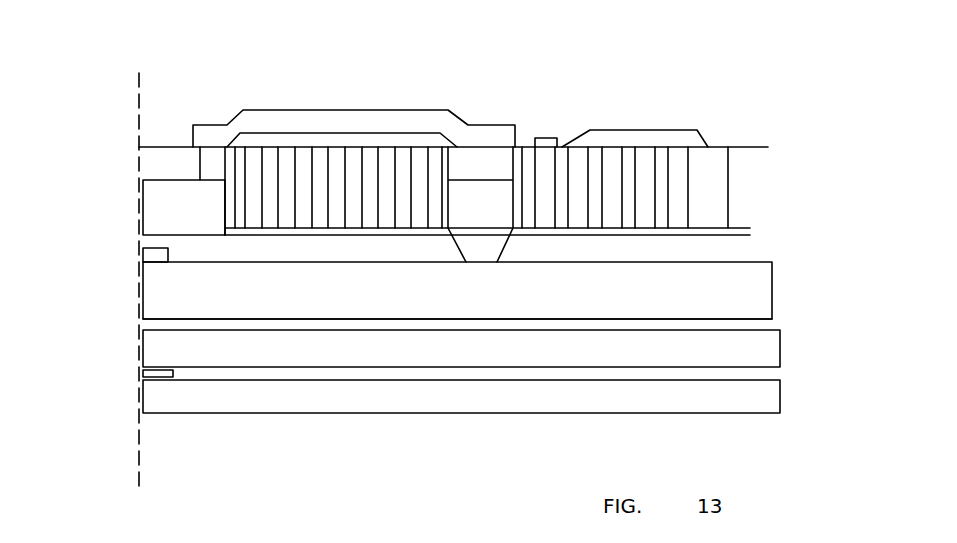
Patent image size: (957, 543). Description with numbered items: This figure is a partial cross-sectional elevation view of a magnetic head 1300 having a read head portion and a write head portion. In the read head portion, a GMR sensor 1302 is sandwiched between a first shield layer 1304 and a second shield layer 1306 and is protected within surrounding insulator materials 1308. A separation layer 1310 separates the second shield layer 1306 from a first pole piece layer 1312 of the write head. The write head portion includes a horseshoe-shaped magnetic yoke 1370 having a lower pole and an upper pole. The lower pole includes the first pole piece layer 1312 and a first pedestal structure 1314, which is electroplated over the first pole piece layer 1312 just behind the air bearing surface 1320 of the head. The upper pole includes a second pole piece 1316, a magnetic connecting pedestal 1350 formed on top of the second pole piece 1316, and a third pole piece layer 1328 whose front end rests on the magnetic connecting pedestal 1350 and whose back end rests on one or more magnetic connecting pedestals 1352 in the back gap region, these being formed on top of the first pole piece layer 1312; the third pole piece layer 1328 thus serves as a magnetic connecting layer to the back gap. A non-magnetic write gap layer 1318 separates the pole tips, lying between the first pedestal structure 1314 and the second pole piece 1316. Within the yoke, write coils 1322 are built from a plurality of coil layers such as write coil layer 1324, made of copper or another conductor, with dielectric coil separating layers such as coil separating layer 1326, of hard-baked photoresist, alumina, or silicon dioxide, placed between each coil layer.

The magnetic head 1300 is at (460, 366).
The GMR sensor 1302 is at (157, 378).
The first shield layer 1304 is at (782, 395).
The second shield layer 1306 is at (780, 343).
The insulator materials 1308 is at (775, 373).
The separation layer 1310 is at (765, 323).
The first pole piece layer 1312 is at (172, 305).
The first pedestal structure 1314 is at (148, 253).
The second pole piece 1316 is at (173, 195).
The non-magnetic write gap layer 1318 is at (160, 240).
The air bearing surface 1320 is at (137, 103).
The write coils 1322 is at (343, 160).
The write coil layer 1324 is at (258, 157).
The coil separating layer 1326 is at (270, 153).
The third pole piece layer 1328 is at (427, 108).
The magnetic connecting pedestal 1350 is at (200, 162).
The magnetic connecting pedestals 1352 is at (485, 138).
The magnetic yoke 1370 is at (348, 50).